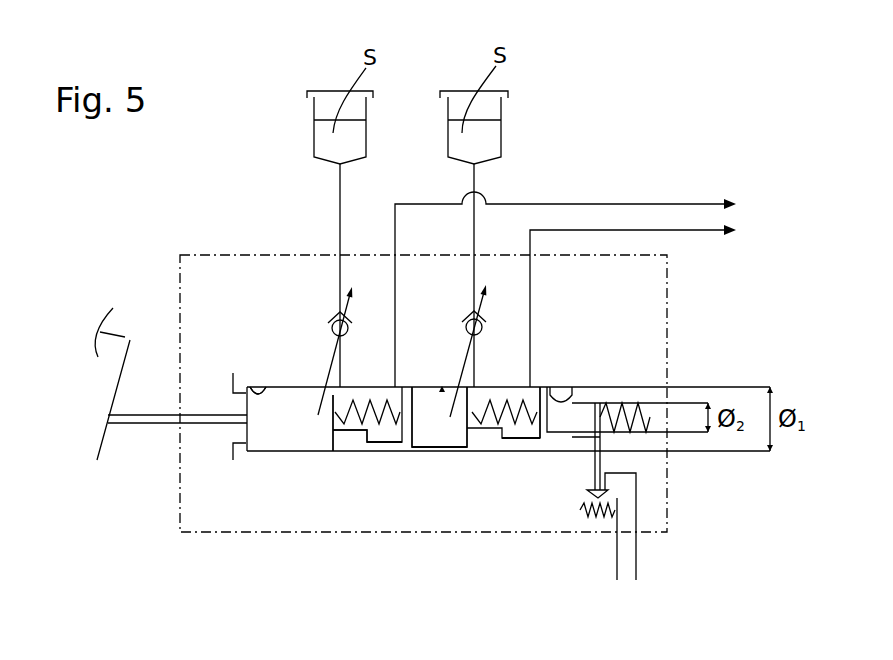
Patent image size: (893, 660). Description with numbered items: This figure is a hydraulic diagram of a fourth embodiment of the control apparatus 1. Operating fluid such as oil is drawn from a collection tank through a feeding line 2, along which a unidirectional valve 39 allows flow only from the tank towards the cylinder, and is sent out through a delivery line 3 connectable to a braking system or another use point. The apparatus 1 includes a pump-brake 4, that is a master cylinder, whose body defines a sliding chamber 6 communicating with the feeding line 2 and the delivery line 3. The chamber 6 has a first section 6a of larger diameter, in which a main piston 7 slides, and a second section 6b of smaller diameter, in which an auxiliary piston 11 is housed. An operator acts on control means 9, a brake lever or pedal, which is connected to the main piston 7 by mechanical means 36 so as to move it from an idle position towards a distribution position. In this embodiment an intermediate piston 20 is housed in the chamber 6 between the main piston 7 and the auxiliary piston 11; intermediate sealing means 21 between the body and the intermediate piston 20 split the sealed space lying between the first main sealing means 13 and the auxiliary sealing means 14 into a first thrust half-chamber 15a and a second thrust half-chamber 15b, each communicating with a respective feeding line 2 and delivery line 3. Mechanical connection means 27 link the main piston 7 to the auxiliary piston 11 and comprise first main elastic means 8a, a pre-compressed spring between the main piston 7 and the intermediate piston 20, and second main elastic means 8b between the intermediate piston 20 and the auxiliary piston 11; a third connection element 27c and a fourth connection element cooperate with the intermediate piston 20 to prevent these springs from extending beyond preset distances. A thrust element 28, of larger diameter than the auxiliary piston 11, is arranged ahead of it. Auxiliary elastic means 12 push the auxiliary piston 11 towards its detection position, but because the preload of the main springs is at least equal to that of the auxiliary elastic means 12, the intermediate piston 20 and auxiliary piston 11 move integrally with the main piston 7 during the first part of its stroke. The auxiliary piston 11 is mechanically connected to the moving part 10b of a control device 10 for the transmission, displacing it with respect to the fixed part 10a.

The apparatus 1 is at (197, 249).
The feeding line 2 is at (336, 202).
The delivery line 3 is at (592, 230).
The pump-brake 4 is at (265, 460).
The sliding chamber 6 is at (498, 395).
The first section 6a is at (250, 388).
The second section 6b is at (557, 398).
The main piston 7 is at (258, 432).
The first main elastic means 8a is at (337, 413).
The second main elastic means 8b is at (467, 434).
The control means 9 is at (130, 338).
The control device 10 is at (645, 495).
The fixed part 10a is at (640, 548).
The moving part 10b is at (600, 463).
The auxiliary piston 11 is at (559, 433).
The auxiliary elastic means 12 is at (620, 410).
The first main sealing means 13 is at (291, 383).
The auxiliary sealing means 14 is at (577, 400).
The first thrust half-chamber 15a is at (342, 440).
The second thrust half-chamber 15b is at (505, 440).
The intermediate piston 20 is at (426, 434).
The intermediate sealing means 21 is at (441, 450).
The mechanical connection means 27 is at (382, 458).
The third connection element 27c is at (523, 455).
The thrust element 28 is at (533, 433).
The mechanical means 36 is at (135, 424).
The unidirectional valve 39 is at (333, 322).